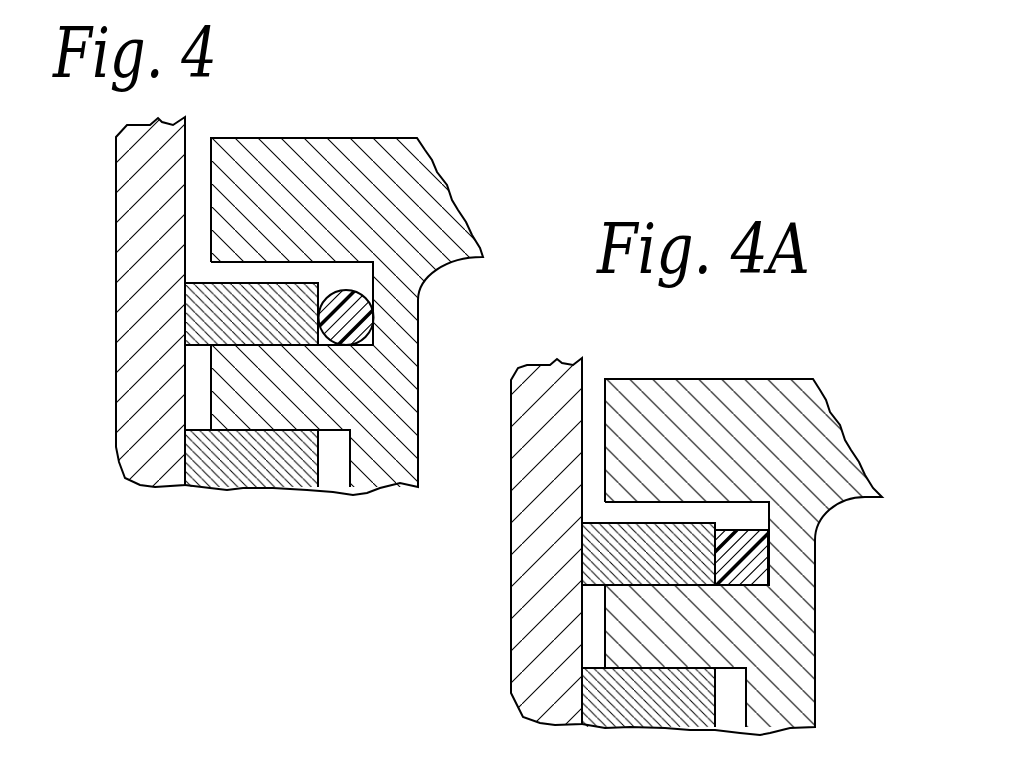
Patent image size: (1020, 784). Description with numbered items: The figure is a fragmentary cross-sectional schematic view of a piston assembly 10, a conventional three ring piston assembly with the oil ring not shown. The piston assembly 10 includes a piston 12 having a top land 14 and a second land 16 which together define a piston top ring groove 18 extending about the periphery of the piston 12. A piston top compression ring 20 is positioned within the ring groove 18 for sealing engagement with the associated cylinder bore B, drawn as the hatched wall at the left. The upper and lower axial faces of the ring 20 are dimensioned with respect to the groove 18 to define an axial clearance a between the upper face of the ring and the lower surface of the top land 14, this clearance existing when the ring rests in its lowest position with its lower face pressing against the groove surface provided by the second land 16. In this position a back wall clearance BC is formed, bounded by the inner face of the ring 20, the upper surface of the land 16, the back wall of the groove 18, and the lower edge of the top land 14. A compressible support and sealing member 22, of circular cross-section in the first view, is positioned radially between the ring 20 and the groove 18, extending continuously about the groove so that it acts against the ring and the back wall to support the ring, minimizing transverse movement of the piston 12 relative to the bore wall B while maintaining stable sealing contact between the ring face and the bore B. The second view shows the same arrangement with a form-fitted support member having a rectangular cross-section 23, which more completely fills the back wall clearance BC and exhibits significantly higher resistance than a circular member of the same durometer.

In FIG. 4, the piston assembly 10 is at (362, 108).
In FIG. 4A, the piston assembly 10 is at (762, 347).
In FIG. 4, the piston 12 is at (398, 138).
In FIG. 4A, the piston 12 is at (796, 379).
In FIG. 4, the top land 14 is at (227, 210).
In FIG. 4A, the top land 14 is at (613, 452).
In FIG. 4, the second land 16 is at (235, 400).
In FIG. 4A, the second land 16 is at (633, 640).
In FIG. 4, the piston top ring groove 18 is at (363, 279).
In FIG. 4A, the piston top ring groove 18 is at (757, 538).
In FIG. 4, the piston top compression ring 20 is at (188, 325).
In FIG. 4A, the piston top compression ring 20 is at (592, 558).
In FIG. 4, the support and sealing member 22 is at (358, 323).
In FIG. 4A, the support member having a rectangular cross-section 23 is at (773, 557).
In FIG. 4, the cylinder bore B is at (185, 139).
In FIG. 4A, the cylinder bore B is at (582, 380).
In FIG. 4, the back wall clearance BC is at (352, 282).
In FIG. 4A, the back wall clearance BC is at (745, 522).
In FIG. 4, the axial clearance a is at (57, 262).
In FIG. 4A, the axial clearance a is at (455, 502).